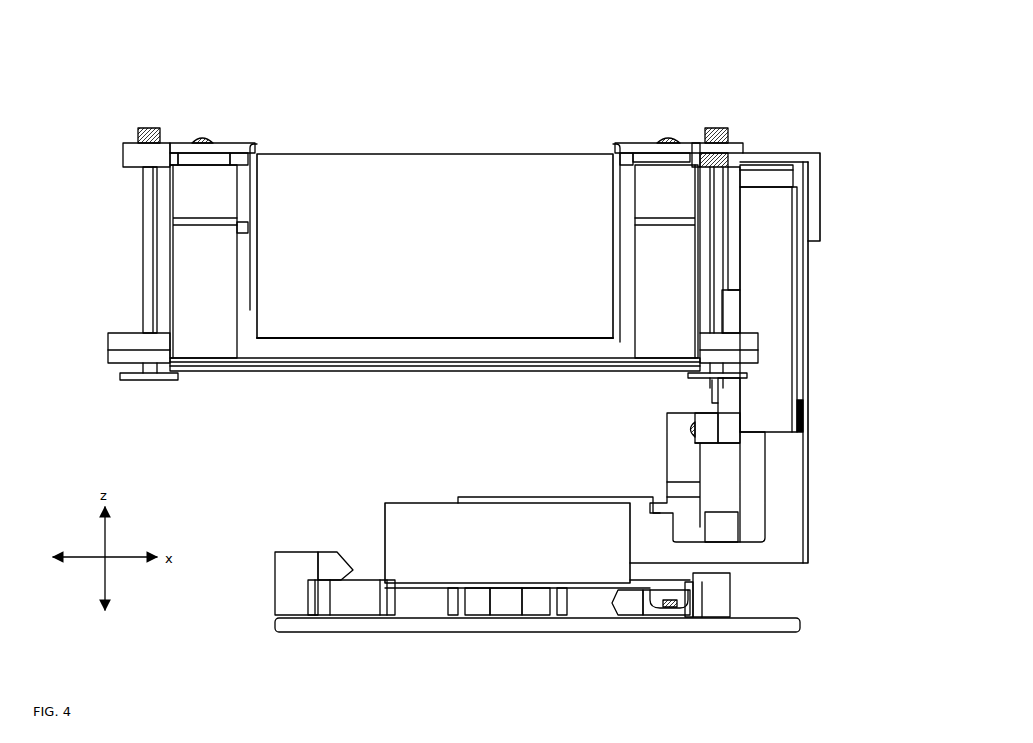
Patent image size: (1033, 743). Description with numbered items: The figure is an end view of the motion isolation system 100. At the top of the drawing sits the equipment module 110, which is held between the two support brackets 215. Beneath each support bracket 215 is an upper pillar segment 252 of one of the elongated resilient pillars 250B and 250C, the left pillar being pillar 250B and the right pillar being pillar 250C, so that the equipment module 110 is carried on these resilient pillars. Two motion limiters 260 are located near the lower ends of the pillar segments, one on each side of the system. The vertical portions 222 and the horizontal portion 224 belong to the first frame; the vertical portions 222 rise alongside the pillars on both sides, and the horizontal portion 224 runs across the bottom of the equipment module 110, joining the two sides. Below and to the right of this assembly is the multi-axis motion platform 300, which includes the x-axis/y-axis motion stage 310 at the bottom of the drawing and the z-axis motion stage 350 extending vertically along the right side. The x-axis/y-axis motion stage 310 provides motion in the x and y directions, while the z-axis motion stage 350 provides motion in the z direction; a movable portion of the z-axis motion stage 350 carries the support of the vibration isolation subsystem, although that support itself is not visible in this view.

The motion isolation system 100 is at (115, 84).
The equipment module 110 is at (432, 152).
The support brackets 215 is at (230, 143).
The vertical portions 222 is at (170, 275).
The horizontal portion 224 is at (352, 372).
The elongated resilient pillar 250B is at (170, 182).
The elongated resilient pillar 250C is at (640, 188).
The upper pillar segments 252 is at (364, 261).
The motion limiters 260 is at (133, 398).
The multi-axis motion platform 300 is at (853, 628).
The x-axis/y-axis motion stage 310 is at (812, 655).
The z-axis motion stage 350 is at (839, 131).